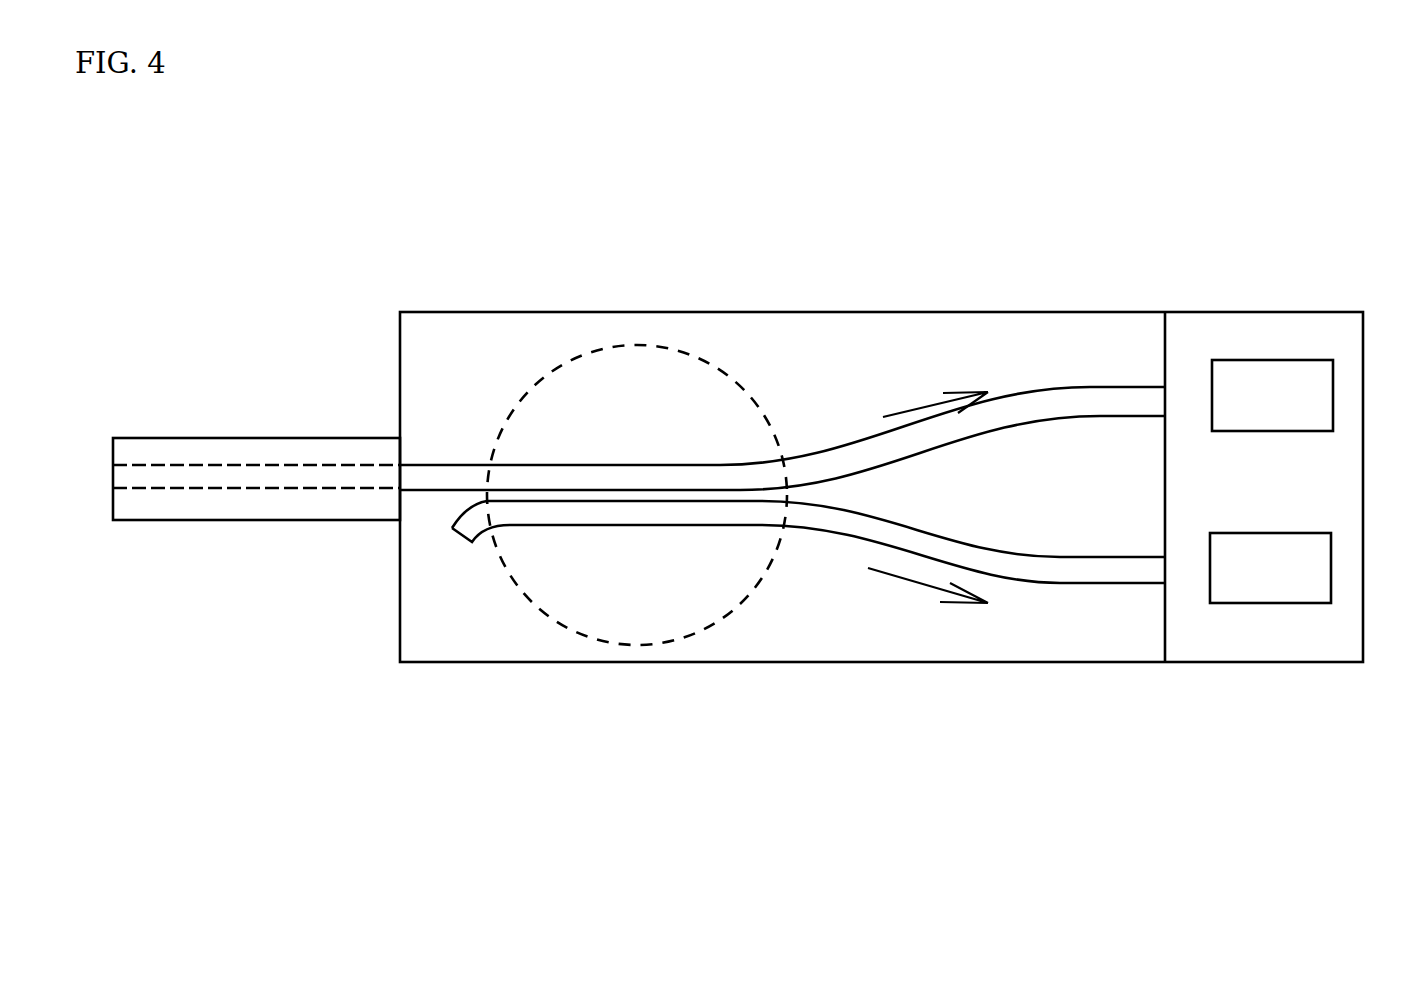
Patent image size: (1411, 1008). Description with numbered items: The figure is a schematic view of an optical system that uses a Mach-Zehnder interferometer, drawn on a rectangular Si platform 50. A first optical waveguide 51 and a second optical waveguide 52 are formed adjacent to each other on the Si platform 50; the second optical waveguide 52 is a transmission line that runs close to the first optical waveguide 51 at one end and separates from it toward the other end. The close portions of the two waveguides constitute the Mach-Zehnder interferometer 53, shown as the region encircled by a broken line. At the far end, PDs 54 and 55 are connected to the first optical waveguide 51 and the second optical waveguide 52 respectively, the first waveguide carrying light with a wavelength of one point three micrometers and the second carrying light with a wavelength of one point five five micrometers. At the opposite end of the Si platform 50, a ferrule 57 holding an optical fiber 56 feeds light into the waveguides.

The Si platform 50 is at (797, 311).
The first optical waveguide 51 is at (1048, 408).
The second optical waveguide 52 is at (1053, 568).
The Mach-Zehnder interferometer 53 is at (547, 617).
The PD 54 is at (1270, 359).
The PD 55 is at (1268, 597).
The optical fiber 56 is at (212, 490).
The ferrule 57 is at (288, 437).